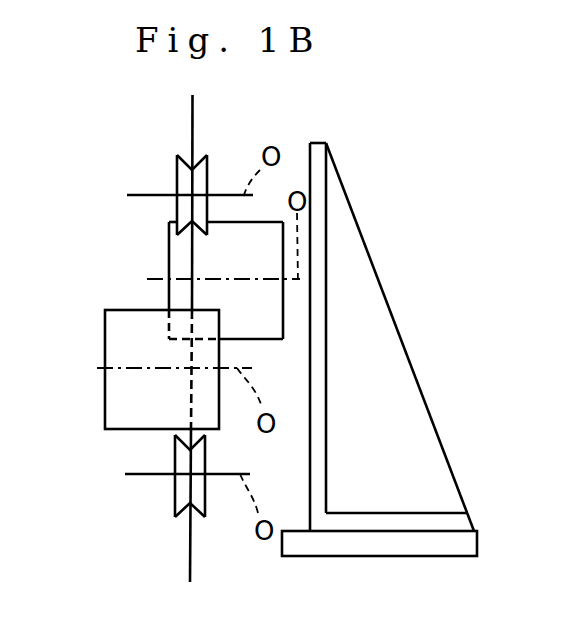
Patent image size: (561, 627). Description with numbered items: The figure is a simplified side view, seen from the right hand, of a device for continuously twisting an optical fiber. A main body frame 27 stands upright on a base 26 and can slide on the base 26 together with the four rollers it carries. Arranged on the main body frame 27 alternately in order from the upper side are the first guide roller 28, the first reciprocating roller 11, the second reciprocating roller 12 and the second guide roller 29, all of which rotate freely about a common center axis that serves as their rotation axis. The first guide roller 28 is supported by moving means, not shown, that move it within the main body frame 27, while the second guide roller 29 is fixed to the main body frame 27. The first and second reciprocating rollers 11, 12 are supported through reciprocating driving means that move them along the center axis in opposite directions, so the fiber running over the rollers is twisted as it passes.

The first reciprocating roller 11 is at (182, 264).
The second reciprocating roller 12 is at (120, 381).
The base 26 is at (405, 549).
The main body frame 27 is at (388, 340).
The first guide roller 28 is at (183, 175).
The second guide roller 29 is at (183, 460).